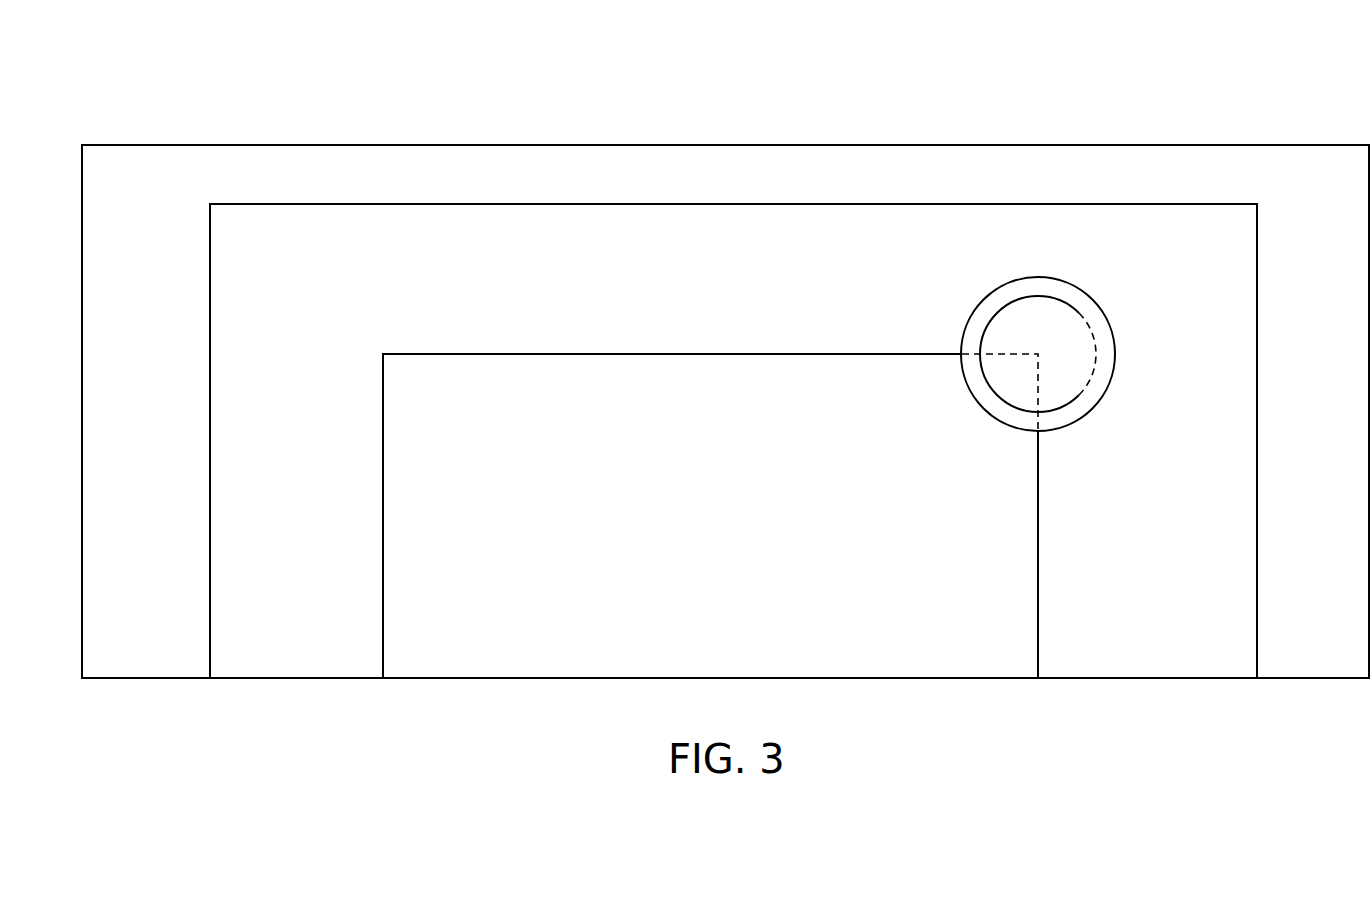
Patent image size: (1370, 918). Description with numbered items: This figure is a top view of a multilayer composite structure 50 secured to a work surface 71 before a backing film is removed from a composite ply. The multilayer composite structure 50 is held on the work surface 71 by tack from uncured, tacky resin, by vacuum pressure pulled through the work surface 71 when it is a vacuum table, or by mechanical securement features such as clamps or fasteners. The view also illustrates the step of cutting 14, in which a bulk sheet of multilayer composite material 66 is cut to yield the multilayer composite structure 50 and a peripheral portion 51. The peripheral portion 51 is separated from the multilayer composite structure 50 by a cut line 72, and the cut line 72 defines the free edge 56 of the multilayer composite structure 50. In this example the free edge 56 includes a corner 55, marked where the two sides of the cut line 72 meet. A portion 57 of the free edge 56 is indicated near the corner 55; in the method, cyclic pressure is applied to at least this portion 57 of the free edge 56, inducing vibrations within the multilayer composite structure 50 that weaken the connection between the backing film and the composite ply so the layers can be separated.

The cutting step 14 is at (1149, 116).
The work surface 71 is at (171, 158).
The bulk sheet of multilayer composite material 66 is at (545, 228).
The peripheral portion 51 is at (808, 259).
The multilayer composite structure 50 is at (783, 368).
The cut line 72 is at (858, 342).
The corner 55 is at (1049, 344).
The portion of the free edge 57 is at (1055, 384).
The free edge 56 is at (1055, 484).